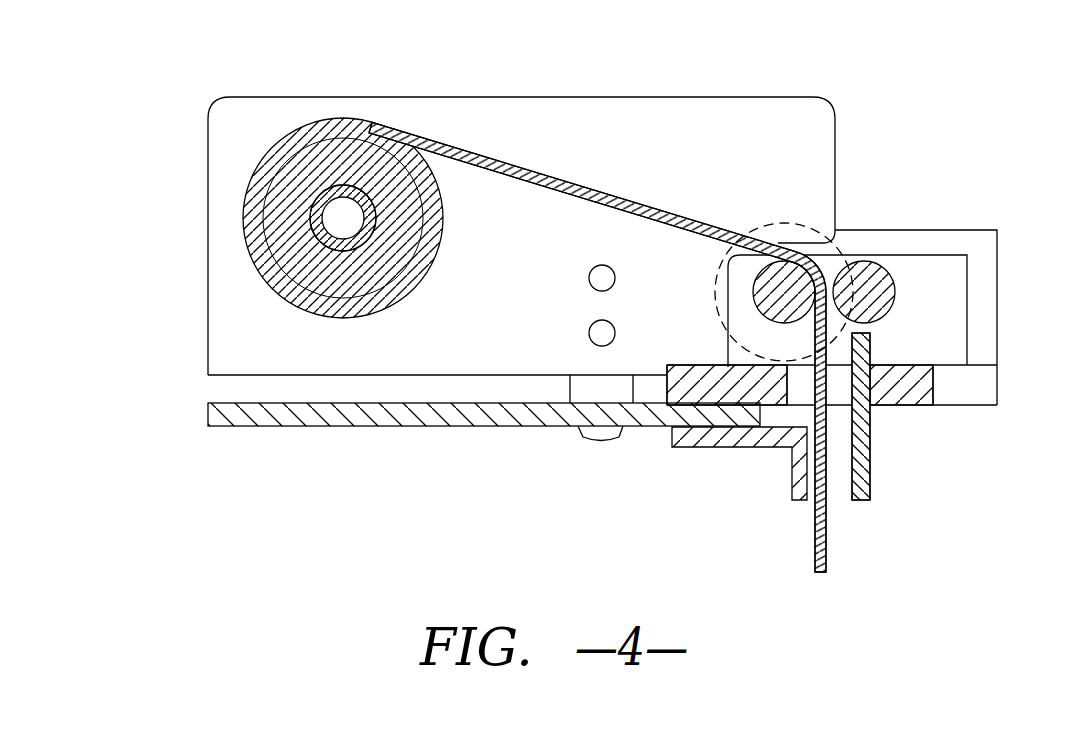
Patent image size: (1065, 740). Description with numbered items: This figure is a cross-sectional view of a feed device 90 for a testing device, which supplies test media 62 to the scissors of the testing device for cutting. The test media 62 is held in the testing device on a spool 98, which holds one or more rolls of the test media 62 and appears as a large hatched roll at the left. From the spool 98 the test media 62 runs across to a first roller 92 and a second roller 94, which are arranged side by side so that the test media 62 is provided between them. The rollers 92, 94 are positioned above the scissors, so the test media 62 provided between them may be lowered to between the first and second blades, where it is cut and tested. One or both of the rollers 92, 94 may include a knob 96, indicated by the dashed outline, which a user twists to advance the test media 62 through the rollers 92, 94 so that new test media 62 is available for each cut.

The feed device 90 is at (588, 331).
The spool 98 is at (317, 192).
The test media 62 is at (827, 545).
The first roller 92 is at (787, 273).
The second roller 94 is at (882, 283).
The knob 96 is at (787, 223).